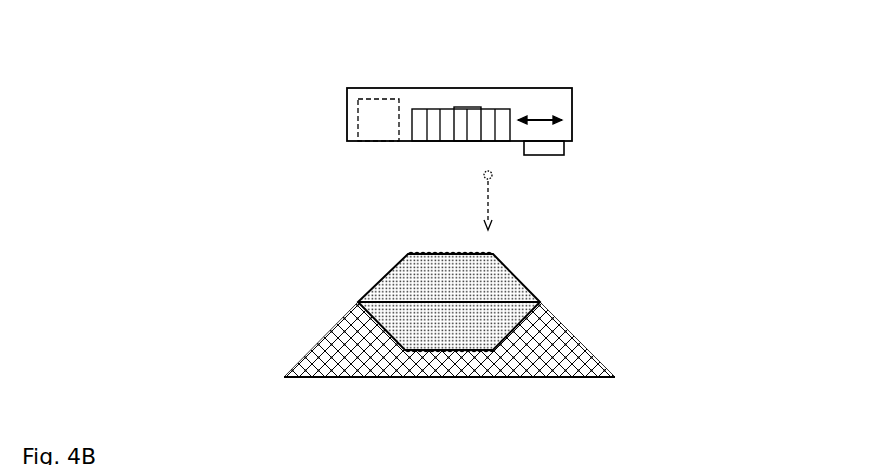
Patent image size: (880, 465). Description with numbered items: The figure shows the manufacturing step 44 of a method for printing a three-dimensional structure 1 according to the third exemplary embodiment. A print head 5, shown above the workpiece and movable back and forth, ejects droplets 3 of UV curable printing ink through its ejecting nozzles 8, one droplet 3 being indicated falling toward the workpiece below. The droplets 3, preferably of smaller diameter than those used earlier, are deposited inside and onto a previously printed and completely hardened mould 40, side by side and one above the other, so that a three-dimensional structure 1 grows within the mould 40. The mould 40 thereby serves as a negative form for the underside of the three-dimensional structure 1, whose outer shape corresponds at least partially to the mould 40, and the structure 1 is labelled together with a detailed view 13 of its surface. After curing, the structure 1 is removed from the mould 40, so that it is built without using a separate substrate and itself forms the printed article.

The three-dimensional structure 1 is at (411, 269).
The detailed view 13 is at (376, 260).
The droplets 3 is at (492, 173).
The print head 5 is at (553, 107).
The ejecting nozzles 8 is at (472, 120).
The mould 40 is at (573, 353).
The manufacturing step 44 is at (614, 236).